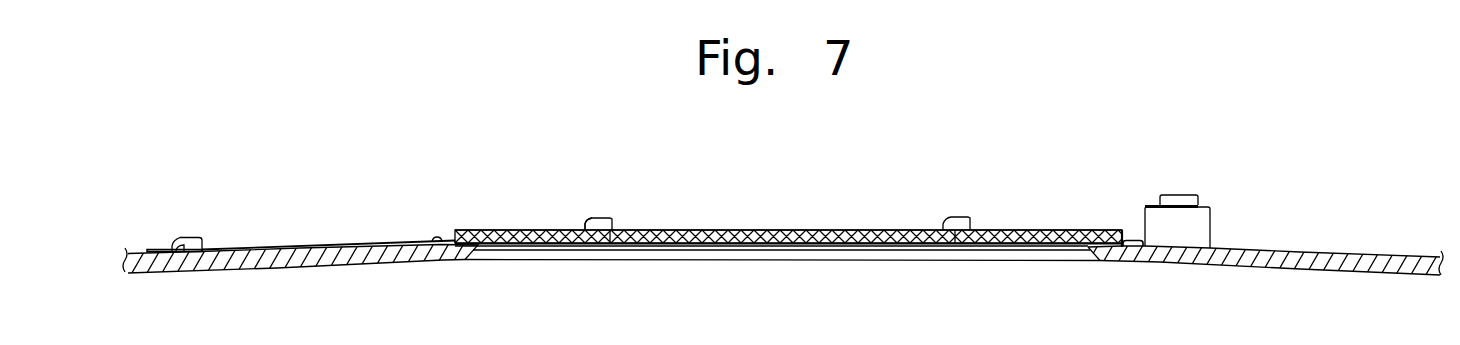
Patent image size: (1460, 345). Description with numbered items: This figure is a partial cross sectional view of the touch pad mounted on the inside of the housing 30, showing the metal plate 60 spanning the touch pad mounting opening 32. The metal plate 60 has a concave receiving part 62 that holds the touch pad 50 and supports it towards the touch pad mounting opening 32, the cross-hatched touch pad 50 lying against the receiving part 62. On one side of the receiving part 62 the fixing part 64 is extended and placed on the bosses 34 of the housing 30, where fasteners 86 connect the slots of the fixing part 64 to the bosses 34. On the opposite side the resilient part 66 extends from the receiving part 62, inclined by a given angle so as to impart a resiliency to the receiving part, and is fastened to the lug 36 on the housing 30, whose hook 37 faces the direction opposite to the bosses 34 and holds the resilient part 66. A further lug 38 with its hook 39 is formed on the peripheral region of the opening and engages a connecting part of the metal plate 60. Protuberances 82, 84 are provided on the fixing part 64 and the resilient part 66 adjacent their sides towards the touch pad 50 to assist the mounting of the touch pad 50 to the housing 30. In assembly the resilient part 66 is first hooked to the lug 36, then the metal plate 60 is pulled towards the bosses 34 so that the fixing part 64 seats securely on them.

The housing 30 is at (302, 270).
The touch pad mounting opening 32 is at (768, 257).
The boss 34 is at (1205, 227).
The lug 36 is at (198, 237).
The hook 37 is at (178, 248).
The lug 38 is at (607, 218).
The hook 39 is at (590, 219).
The touch pad 50 is at (745, 229).
The metal plate 60 is at (786, 196).
The concave receiving part 62 is at (533, 229).
The fixing part 64 is at (1148, 206).
The resilient part 66 is at (304, 247).
The protuberance 82 is at (1130, 247).
The protuberance 84 is at (436, 247).
The fastener 86 is at (1187, 196).